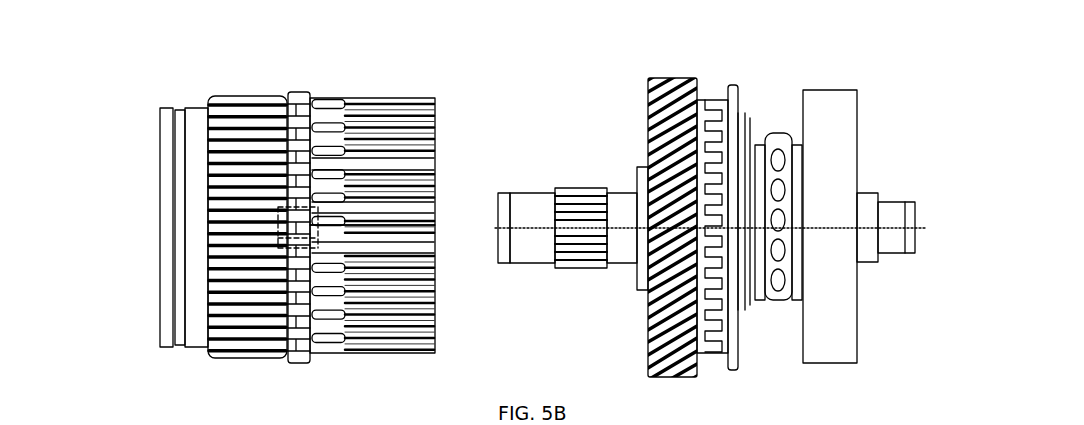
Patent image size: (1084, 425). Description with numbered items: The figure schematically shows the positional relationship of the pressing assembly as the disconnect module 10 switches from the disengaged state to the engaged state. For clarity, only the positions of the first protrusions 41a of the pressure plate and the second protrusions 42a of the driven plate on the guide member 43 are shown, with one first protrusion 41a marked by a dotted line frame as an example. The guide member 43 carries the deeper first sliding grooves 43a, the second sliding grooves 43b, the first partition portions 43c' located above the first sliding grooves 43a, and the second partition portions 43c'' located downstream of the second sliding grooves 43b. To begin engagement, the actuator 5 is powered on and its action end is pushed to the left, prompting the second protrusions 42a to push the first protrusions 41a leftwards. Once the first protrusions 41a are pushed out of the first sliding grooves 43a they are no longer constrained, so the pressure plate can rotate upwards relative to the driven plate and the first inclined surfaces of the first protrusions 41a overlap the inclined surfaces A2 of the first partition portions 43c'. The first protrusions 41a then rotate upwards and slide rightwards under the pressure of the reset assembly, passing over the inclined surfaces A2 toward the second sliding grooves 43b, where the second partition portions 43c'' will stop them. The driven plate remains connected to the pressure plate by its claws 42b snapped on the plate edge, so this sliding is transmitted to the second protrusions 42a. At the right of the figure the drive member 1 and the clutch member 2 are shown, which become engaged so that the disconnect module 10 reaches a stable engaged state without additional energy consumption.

The guide member 43 is at (243, 78).
The second protrusions 42a is at (341, 96).
The first sliding grooves 43a is at (372, 287).
The second sliding grooves 43b is at (372, 162).
The first partition portions 43c' is at (400, 205).
The second partition portions 43c'' is at (402, 207).
The inclined surfaces A2 is at (280, 207).
The first protrusions 41a is at (280, 238).
The disconnect module 10 is at (745, 33).
The drive member 1 is at (701, 125).
The clutch member 2 is at (728, 100).
The claws 42b is at (772, 133).
The actuator 5 is at (845, 118).